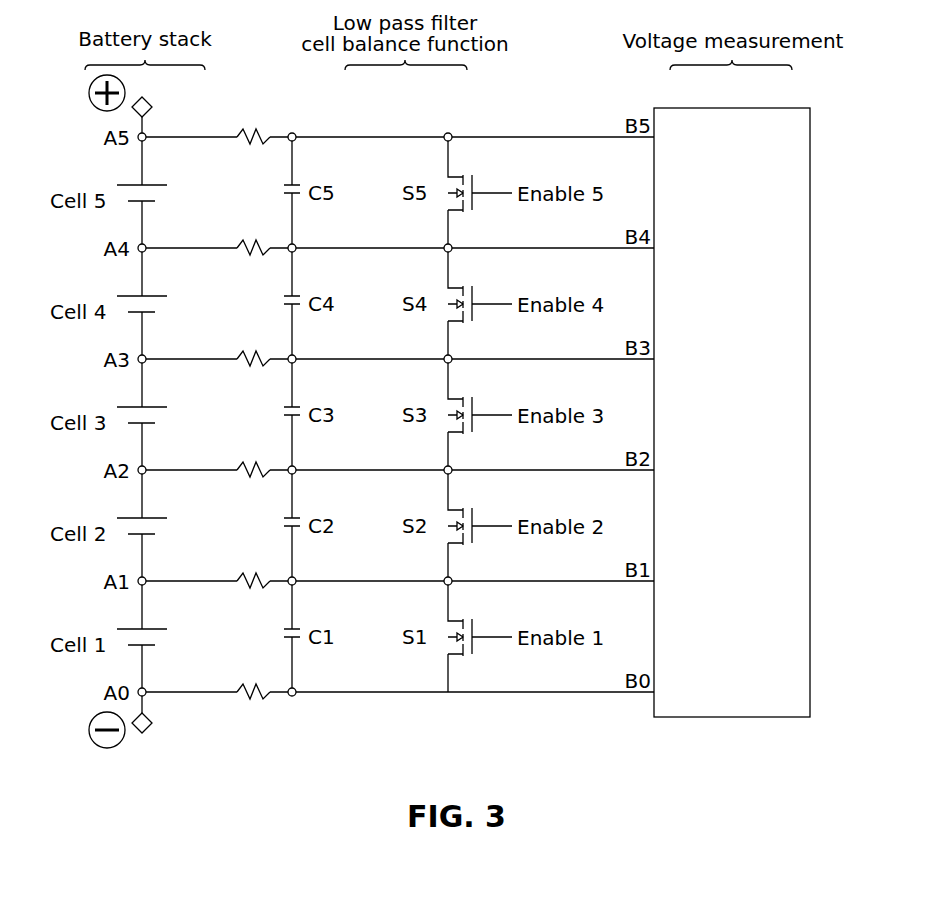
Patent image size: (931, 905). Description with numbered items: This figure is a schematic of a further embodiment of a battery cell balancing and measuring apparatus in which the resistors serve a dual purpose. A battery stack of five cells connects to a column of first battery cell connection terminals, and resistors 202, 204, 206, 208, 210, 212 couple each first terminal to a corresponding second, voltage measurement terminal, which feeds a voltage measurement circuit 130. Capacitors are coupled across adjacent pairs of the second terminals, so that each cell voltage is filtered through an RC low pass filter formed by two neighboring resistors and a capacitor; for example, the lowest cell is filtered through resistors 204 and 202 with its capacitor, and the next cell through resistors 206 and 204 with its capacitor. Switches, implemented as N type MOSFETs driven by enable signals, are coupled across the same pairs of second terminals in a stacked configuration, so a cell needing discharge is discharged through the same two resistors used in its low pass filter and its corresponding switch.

The voltage measurement circuit 130 is at (730, 717).
The resistor 202 is at (250, 700).
The resistor 204 is at (250, 589).
The resistor 206 is at (250, 478).
The resistor 208 is at (250, 367).
The resistor 210 is at (250, 256).
The resistor 212 is at (250, 145).